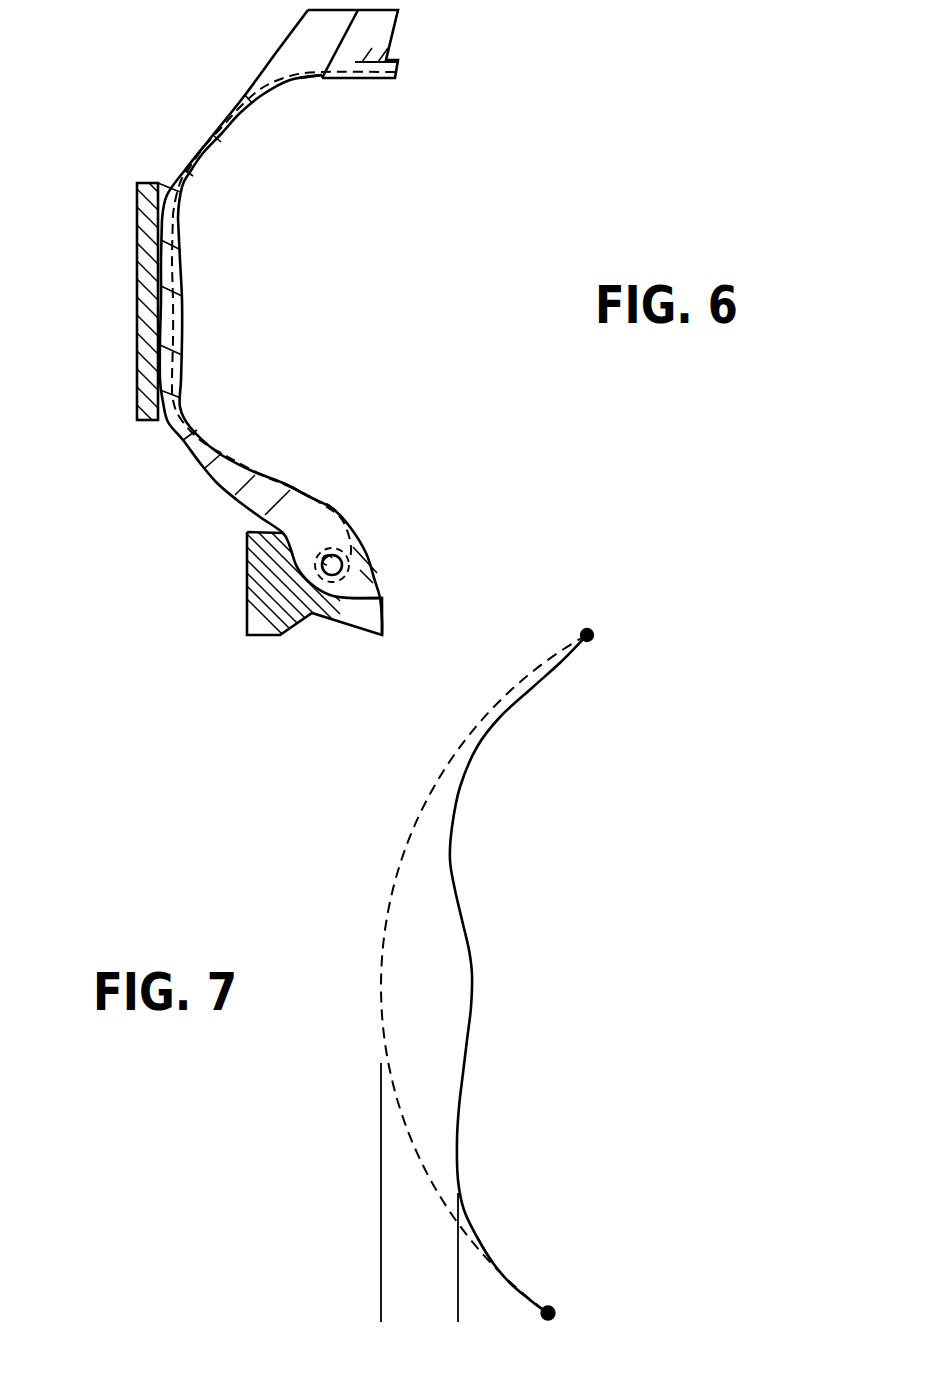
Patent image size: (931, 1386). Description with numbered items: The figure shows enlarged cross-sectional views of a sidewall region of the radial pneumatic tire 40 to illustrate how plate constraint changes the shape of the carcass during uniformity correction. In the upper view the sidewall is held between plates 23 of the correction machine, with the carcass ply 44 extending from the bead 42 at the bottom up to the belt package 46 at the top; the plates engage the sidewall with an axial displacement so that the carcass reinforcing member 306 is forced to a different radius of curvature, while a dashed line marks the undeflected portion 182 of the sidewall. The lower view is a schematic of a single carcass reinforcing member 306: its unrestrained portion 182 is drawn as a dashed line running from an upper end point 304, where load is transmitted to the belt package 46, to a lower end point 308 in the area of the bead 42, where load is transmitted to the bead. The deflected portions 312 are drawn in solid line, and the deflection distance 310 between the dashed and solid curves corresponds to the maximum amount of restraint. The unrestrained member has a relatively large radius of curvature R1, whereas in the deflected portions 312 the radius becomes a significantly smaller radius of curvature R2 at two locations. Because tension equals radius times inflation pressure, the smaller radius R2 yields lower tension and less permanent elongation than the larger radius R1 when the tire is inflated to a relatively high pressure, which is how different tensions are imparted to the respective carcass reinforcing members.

In FIG. 6, the plates 23 is at (137, 421).
In FIG. 6, the radial pneumatic tire 40 is at (216, 486).
In FIG. 6, the bead 42 is at (343, 556).
In FIG. 6, the carcass ply 44 is at (258, 106).
In FIG. 6, the belt package 46 is at (396, 52).
In FIG. 6, the undeflected portion 182 is at (165, 185).
In FIG. 7, the undeflected portion 182 is at (424, 800).
In FIG. 6, the upper end point 304 is at (321, 71).
In FIG. 7, the upper end point 304 is at (594, 635).
In FIG. 6, the carcass reinforcing member 306 is at (301, 489).
In FIG. 7, the carcass reinforcing member 306 is at (500, 1261).
In FIG. 6, the lower end point 308 is at (337, 506).
In FIG. 7, the lower end point 308 is at (554, 1313).
In FIG. 7, the deflection distance 310 is at (498, 1307).
In FIG. 7, the deflected portion 312 is at (455, 854).
In FIG. 7, the radius of curvature R1 is at (391, 906).
In FIG. 6, the radius of curvature R2 is at (231, 128).
In FIG. 7, the radius of curvature R2 is at (487, 737).